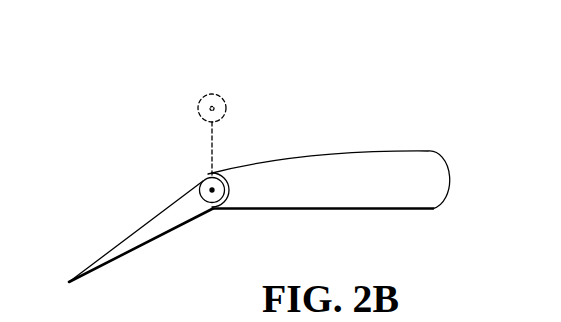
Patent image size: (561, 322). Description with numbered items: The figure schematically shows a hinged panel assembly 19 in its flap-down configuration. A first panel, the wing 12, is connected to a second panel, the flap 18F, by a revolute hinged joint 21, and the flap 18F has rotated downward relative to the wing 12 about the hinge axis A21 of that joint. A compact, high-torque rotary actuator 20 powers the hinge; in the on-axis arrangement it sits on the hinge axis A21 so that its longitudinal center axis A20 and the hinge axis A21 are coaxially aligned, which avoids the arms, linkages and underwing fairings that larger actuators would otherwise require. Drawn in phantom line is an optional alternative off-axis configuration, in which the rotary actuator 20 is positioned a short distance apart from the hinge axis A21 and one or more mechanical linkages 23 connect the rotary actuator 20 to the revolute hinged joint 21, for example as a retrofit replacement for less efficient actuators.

The wing 12 is at (361, 191).
The flap 18F is at (140, 220).
The hinged panel assembly 19 is at (403, 123).
The rotary actuator 20 is at (201, 101).
The revolute hinged joint 21 is at (200, 172).
The mechanical linkage 23 is at (214, 145).
The longitudinal center axis A20 is at (227, 102).
The hinge axis A21 is at (212, 196).